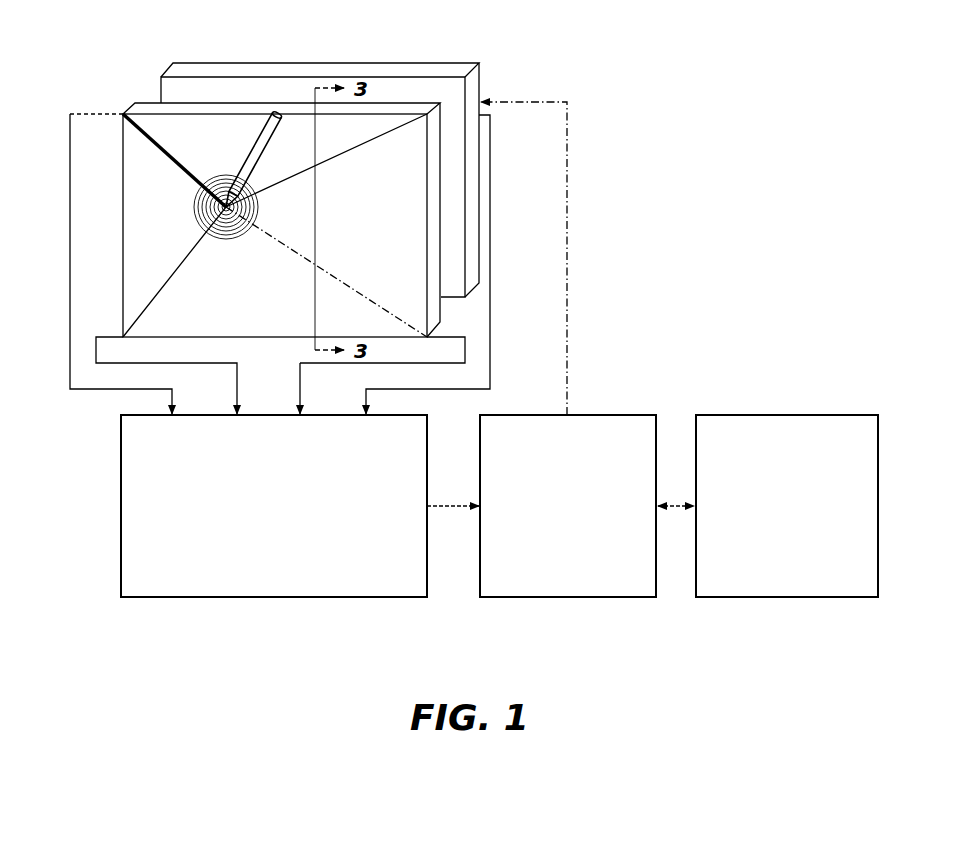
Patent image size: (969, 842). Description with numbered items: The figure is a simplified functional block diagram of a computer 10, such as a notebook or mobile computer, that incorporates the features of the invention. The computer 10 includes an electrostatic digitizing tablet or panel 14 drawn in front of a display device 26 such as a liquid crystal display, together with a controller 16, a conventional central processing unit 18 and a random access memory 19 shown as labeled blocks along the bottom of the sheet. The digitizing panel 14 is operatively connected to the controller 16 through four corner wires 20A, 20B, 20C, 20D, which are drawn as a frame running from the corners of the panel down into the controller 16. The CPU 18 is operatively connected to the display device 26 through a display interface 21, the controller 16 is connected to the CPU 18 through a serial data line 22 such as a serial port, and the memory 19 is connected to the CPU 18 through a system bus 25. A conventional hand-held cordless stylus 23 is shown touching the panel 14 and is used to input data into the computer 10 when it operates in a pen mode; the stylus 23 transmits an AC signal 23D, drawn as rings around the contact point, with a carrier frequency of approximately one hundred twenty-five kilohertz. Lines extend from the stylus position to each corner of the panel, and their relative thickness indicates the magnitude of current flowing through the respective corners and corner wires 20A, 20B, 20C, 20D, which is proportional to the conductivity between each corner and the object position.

The computer 10 is at (762, 246).
The electrostatic digitizing tablet 14 is at (237, 312).
The controller 16 is at (118, 551).
The central processing unit 18 is at (580, 600).
The random access memory 19 is at (812, 600).
The corner wire 20A is at (96, 348).
The corner wire 20B is at (70, 198).
The corner wire 20C is at (490, 204).
The corner wire 20D is at (465, 350).
The display interface 21 is at (567, 188).
The serial data line 22 is at (460, 512).
The stylus 23 is at (242, 153).
The AC signal 23D is at (213, 170).
The system bus 25 is at (680, 512).
The display device 26 is at (362, 63).